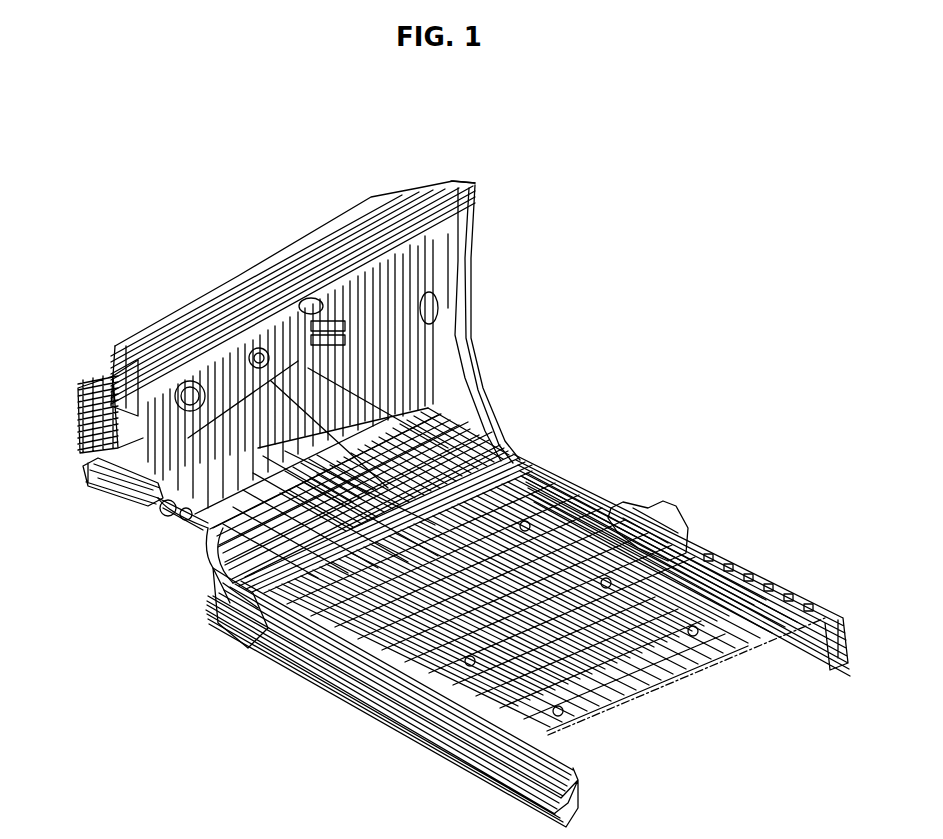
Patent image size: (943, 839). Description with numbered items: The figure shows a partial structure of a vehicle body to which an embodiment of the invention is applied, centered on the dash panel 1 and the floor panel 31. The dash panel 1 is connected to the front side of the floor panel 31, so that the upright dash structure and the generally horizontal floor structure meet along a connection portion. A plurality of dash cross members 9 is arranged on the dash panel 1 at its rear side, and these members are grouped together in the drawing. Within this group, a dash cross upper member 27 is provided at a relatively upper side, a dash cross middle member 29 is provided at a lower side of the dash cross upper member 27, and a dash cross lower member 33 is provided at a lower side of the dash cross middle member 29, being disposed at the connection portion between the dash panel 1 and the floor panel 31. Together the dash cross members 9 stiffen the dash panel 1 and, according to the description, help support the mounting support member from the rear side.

The dash panel 1 is at (400, 333).
The dash cross members 9 is at (157, 566).
The dash cross upper member 27 is at (148, 484).
The dash cross middle member 29 is at (200, 520).
The floor panel 31 is at (577, 480).
The dash cross lower member 33 is at (197, 616).